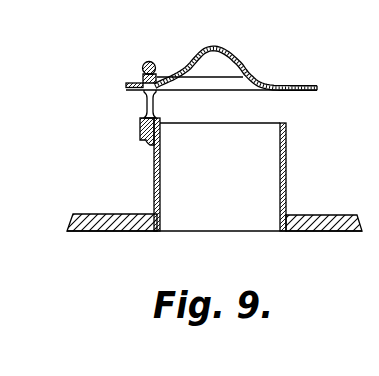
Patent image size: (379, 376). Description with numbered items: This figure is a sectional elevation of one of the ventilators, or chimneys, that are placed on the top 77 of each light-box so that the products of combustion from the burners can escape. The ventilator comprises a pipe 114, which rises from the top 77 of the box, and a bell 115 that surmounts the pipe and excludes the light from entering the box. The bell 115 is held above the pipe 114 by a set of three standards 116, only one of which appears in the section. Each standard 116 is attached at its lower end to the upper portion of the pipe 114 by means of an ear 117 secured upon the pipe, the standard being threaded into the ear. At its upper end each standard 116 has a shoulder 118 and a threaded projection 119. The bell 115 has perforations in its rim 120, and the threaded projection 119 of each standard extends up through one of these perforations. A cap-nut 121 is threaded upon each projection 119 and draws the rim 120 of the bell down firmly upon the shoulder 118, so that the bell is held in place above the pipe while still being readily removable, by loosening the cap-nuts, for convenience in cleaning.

The top of the box 77 is at (326, 215).
The pipe 114 is at (220, 174).
The bell 115 is at (232, 51).
The standard 116 is at (153, 106).
The ear 117 is at (148, 145).
The shoulder 118 is at (142, 92).
The threaded projection 119 is at (143, 73).
The rim 120 is at (307, 87).
The cap-nut 121 is at (153, 66).